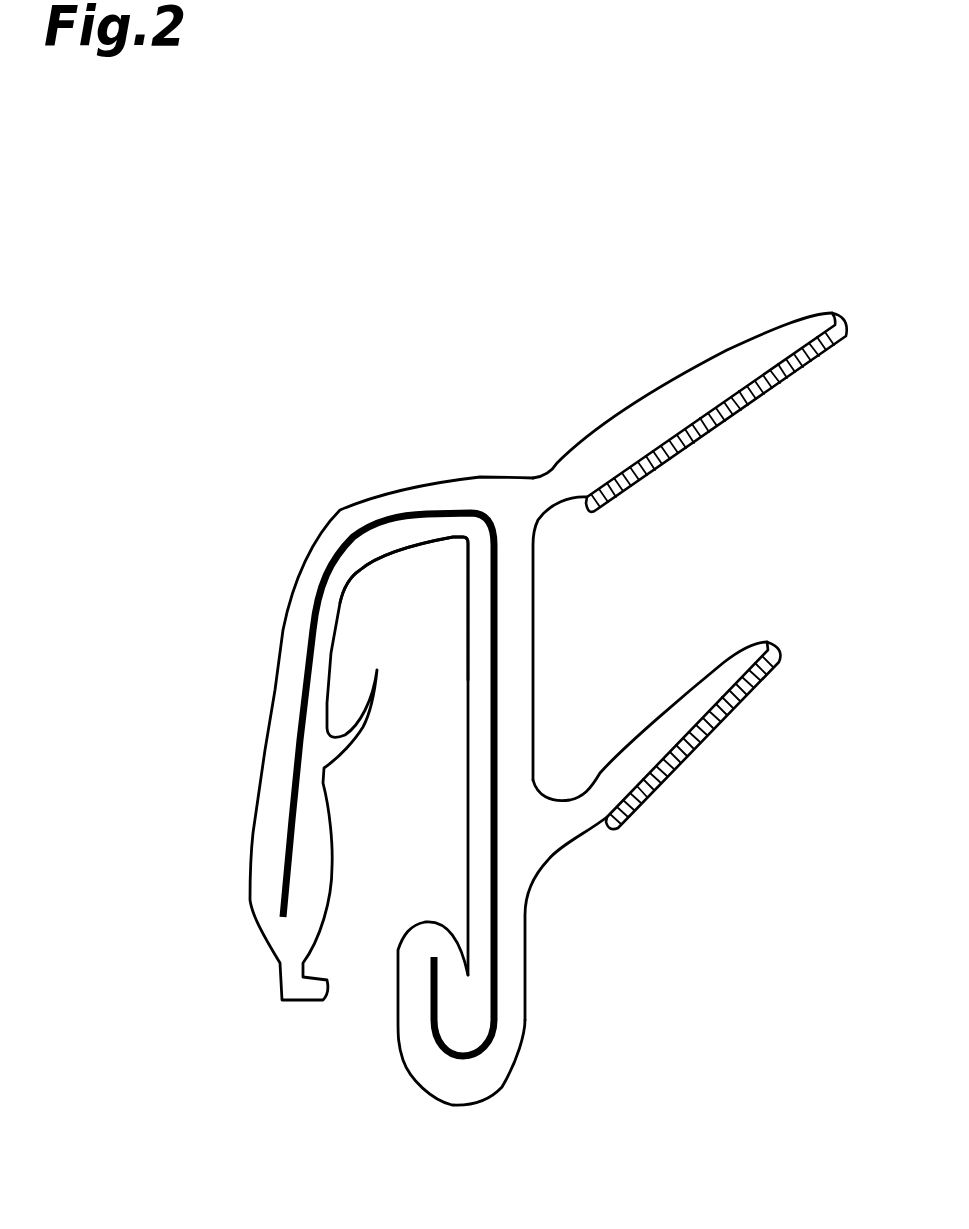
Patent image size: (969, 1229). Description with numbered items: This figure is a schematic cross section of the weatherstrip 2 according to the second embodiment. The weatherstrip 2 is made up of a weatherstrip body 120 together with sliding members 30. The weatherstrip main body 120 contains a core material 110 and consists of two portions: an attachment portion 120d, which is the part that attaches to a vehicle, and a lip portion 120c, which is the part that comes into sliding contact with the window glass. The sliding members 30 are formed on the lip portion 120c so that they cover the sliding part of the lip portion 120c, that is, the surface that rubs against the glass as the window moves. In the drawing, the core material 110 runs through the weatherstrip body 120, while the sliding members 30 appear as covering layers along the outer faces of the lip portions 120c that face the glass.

The weatherstrip 2 is at (777, 180).
The weatherstrip body 120 is at (277, 700).
The lip portion 120c is at (690, 373).
The attachment portion 120d is at (393, 537).
The sliding members 30 is at (797, 390).
The core material 110 is at (498, 932).